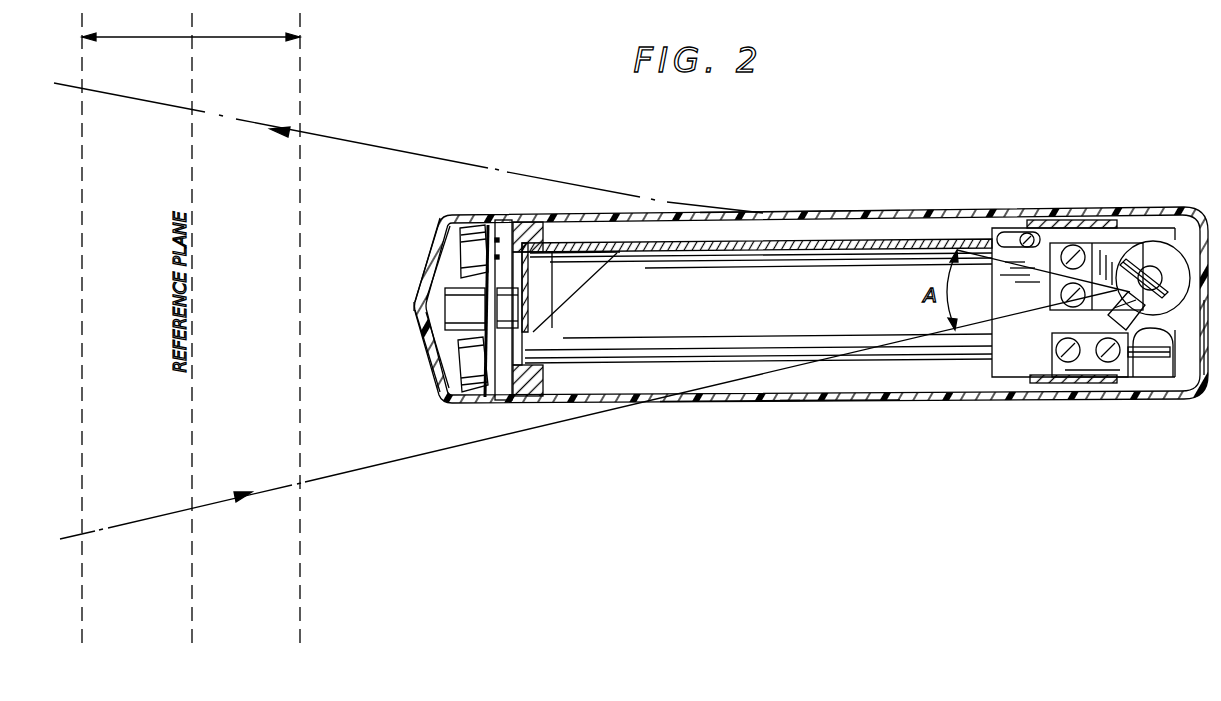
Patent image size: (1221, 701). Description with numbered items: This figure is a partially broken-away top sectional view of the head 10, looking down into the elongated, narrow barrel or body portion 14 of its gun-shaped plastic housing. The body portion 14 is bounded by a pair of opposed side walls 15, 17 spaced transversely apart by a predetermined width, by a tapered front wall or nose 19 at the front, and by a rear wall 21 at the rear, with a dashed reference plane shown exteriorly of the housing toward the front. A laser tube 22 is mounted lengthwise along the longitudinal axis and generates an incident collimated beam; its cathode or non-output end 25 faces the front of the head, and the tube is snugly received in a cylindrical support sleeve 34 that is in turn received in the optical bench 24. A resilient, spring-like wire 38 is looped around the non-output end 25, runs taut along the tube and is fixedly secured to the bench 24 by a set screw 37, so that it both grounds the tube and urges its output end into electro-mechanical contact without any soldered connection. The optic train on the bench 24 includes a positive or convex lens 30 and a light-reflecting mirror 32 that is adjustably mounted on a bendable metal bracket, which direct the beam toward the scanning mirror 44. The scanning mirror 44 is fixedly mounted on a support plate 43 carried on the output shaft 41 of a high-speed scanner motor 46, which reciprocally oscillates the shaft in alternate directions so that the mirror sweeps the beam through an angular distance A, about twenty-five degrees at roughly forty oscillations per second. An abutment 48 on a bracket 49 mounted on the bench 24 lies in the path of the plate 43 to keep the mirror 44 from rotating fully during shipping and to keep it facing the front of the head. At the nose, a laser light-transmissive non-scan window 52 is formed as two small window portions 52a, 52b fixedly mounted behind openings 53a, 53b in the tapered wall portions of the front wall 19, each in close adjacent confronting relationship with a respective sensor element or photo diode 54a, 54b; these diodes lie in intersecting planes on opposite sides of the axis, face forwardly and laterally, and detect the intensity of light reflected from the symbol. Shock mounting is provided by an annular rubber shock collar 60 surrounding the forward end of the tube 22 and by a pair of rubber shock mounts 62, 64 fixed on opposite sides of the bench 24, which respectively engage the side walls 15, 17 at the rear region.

The head 10 is at (950, 200).
The body portion 14 is at (732, 404).
The side wall 15 is at (806, 402).
The side wall 17 is at (773, 210).
The front wall 19 is at (405, 308).
The rear wall 21 is at (1203, 397).
The laser tube 22 is at (561, 294).
The optical bench 24 is at (1012, 365).
The non-output end 25 is at (422, 322).
The positive lens 30 is at (1152, 340).
The light-reflecting mirror 32 is at (1138, 358).
The cylindrical support sleeve 34 is at (613, 250).
The set screw 37 is at (1024, 235).
The resilient wire 38 is at (553, 244).
The output shaft 41 is at (1150, 262).
The support plate 43 is at (1122, 262).
The scanning mirror 44 is at (1161, 278).
The scanner motor 46 is at (1186, 242).
The abutment 48 is at (1112, 312).
The bracket 49 is at (1056, 336).
The non-scan window 52 is at (400, 309).
The non-scan window portion 52a is at (432, 240).
The non-scan window portion 52b is at (432, 378).
The opening 53a is at (420, 290).
The opening 53b is at (420, 327).
The sensor element 54a is at (478, 228).
The sensor element 54b is at (480, 398).
The annular shock collar 60 is at (537, 400).
The rubber shock mount 62 is at (1082, 383).
The rubber shock mount 64 is at (1064, 221).